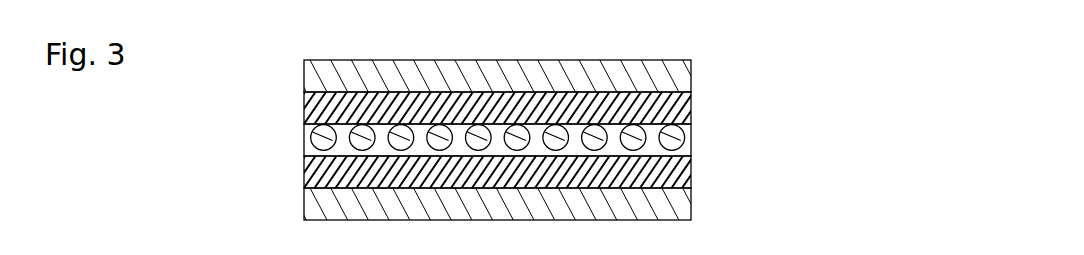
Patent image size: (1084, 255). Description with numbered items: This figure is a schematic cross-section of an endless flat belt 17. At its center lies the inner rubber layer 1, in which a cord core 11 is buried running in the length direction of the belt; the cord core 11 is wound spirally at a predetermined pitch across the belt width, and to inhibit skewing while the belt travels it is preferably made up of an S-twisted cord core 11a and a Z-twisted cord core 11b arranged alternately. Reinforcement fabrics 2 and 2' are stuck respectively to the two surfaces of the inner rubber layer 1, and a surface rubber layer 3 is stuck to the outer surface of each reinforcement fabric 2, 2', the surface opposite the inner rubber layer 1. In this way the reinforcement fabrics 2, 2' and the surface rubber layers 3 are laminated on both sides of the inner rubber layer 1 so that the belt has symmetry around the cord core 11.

The surface rubber layer 3 is at (692, 78).
The reinforcement fabric 2 is at (528, 110).
The reinforcement fabric 2' is at (531, 172).
The inner rubber layer 1 is at (692, 143).
The cord core 11 is at (421, 146).
The S-twisted cord core 11a is at (312, 132).
The Z-twisted cord core 11b is at (355, 142).
The endless flat belt 17 is at (278, 100).